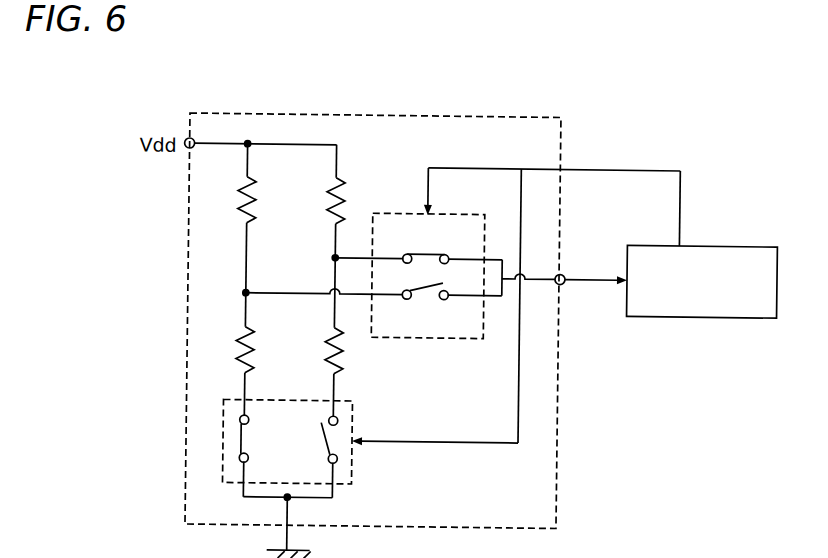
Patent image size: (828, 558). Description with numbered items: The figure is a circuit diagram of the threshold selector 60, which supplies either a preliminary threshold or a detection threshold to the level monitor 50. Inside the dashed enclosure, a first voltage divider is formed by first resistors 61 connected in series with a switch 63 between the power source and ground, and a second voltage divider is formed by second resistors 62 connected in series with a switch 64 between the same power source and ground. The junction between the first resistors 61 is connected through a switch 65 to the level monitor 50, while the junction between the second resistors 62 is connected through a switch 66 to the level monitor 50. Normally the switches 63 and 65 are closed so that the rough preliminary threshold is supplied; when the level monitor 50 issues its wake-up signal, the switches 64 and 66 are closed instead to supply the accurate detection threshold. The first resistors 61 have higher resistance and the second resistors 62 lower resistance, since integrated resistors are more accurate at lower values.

The level monitor 50 is at (734, 240).
The threshold selector 60 is at (562, 112).
The first resistors 61 is at (236, 197).
The second resistors 62 is at (327, 195).
The switch 63 is at (254, 431).
The switch 64 is at (324, 439).
The switch 65 is at (429, 240).
The switch 66 is at (432, 299).